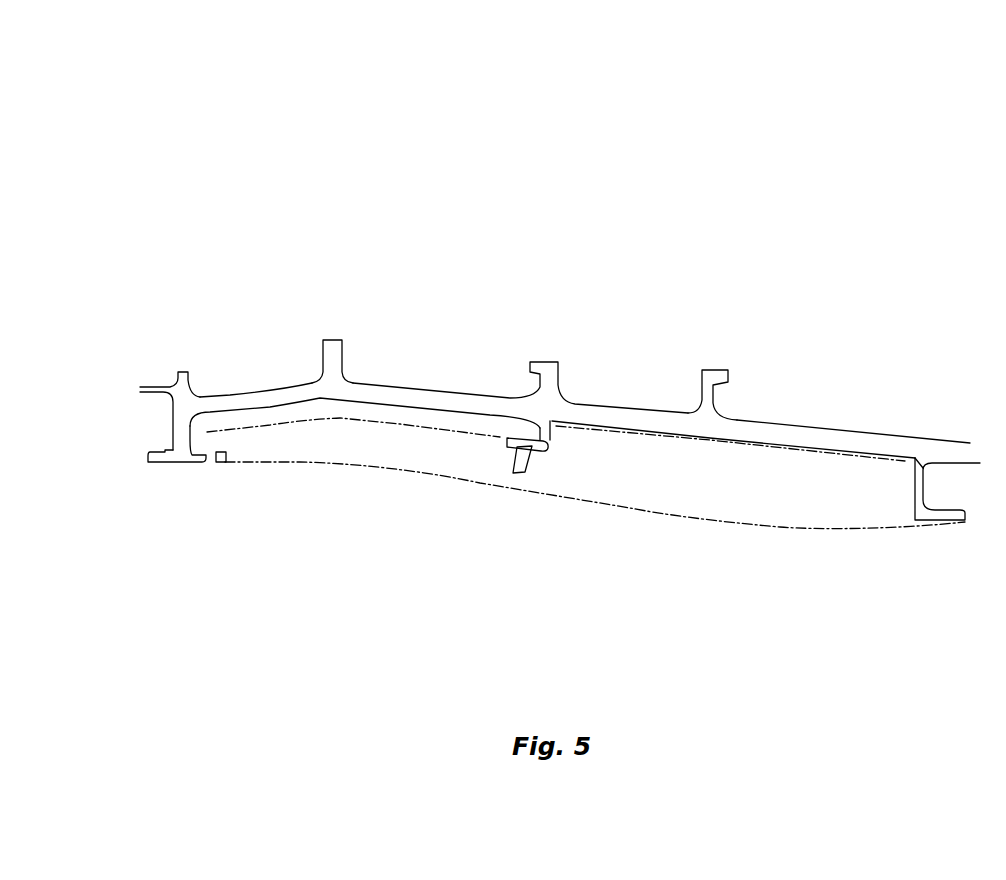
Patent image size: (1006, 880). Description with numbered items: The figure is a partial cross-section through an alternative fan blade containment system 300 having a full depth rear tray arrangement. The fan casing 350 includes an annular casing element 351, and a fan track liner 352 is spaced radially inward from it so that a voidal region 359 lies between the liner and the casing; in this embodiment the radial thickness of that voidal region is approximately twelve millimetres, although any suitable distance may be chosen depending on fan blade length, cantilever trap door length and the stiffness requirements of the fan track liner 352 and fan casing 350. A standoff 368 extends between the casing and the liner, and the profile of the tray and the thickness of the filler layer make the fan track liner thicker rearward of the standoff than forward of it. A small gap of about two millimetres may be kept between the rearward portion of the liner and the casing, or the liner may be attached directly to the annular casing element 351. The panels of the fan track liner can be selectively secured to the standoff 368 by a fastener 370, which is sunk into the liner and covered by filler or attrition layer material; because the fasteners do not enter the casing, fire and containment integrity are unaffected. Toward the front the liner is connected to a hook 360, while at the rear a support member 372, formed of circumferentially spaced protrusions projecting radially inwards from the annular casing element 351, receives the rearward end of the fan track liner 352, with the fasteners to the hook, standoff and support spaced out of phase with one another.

The fan blade containment system 300 is at (775, 207).
The fan casing 350 is at (418, 383).
The annular casing element 351 is at (778, 435).
The fan track liner 352 is at (347, 433).
The voidal region 359 is at (456, 433).
The hook 360 is at (178, 450).
The standoff 368 is at (547, 438).
The fastener 370 is at (522, 470).
The support member 372 is at (920, 500).